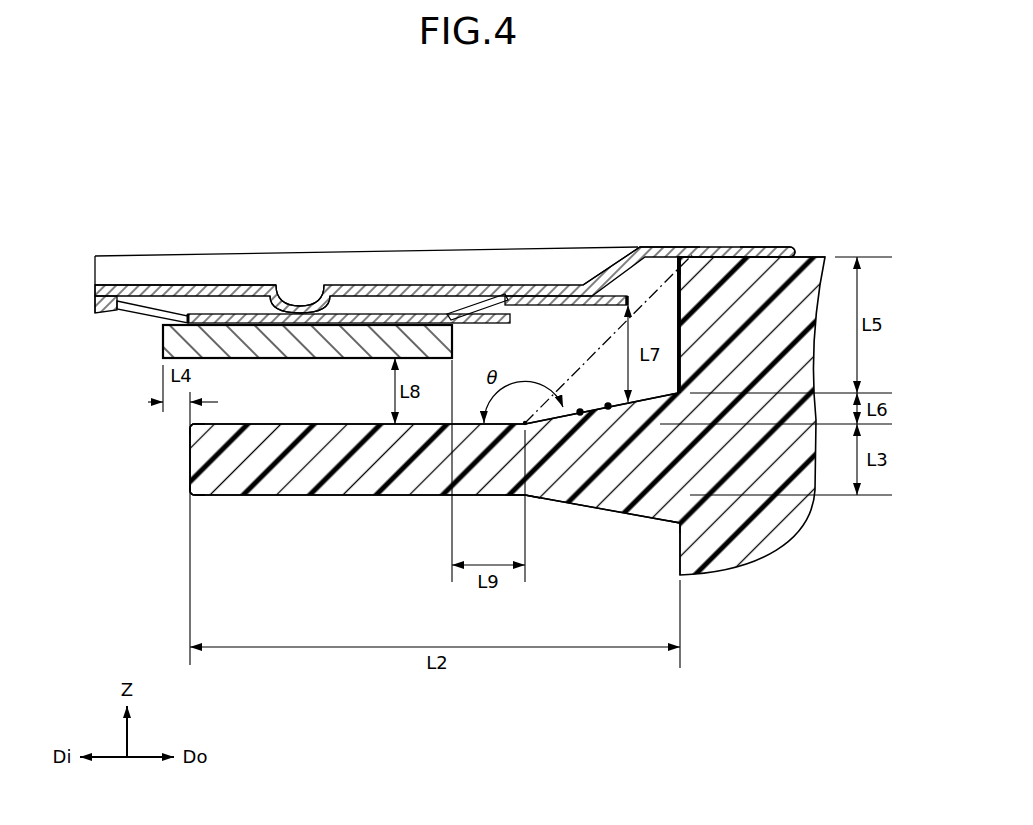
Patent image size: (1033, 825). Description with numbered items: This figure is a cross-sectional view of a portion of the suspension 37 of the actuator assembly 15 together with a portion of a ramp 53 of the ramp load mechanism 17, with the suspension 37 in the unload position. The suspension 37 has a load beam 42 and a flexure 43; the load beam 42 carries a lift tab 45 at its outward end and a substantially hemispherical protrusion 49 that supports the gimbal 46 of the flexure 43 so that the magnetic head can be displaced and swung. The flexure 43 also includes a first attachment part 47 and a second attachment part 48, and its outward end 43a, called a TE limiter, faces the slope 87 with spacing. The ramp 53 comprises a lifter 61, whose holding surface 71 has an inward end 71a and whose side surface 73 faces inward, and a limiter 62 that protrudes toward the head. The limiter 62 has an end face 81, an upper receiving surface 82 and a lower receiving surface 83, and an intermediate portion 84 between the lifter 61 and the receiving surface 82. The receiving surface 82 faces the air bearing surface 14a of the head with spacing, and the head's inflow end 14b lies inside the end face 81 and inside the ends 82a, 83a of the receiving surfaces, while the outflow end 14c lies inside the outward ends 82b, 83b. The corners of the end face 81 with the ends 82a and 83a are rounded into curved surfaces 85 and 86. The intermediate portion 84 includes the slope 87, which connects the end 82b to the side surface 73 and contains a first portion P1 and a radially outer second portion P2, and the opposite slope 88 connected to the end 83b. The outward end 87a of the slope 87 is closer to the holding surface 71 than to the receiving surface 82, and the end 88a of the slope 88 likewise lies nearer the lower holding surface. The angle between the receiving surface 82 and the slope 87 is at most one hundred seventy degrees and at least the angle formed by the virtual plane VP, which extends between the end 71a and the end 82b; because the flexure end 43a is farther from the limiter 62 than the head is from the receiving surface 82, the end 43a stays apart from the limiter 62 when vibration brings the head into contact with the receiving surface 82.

The actuator assembly 15 is at (415, 268).
The suspension 37 is at (415, 268).
The load beam 42 is at (196, 268).
The receiving surface 82 is at (300, 423).
The protrusion 49 is at (318, 302).
The gimbal 46 is at (393, 285).
The outflow end 14c is at (455, 321).
The end of receiving surface 82b is at (506, 300).
The second attachment part 48 is at (580, 412).
The end of flexure 43a is at (629, 294).
The slope 87 is at (677, 350).
The end of slope 87a is at (677, 255).
The end of holding surface 71a is at (690, 247).
The lift tab 45 is at (778, 246).
The holding surface 71 is at (824, 257).
The flexure 43 is at (112, 329).
The first attachment part 47 is at (100, 312).
The inflow end 14b is at (163, 355).
The end of receiving surface 82a is at (193, 424).
The air bearing surface 14a is at (332, 360).
The curved surface 85 is at (190, 425).
The end face 81 is at (190, 462).
The curved surface 86 is at (190, 493).
The end of receiving surface 83a is at (193, 493).
The limiter 62 is at (320, 480).
The receiving surface 83 is at (352, 496).
The end of receiving surface 83b is at (528, 497).
The slope 88 is at (592, 507).
The intermediate portion 84 is at (615, 512).
The end of slope 88a is at (677, 524).
The side surface 73 is at (678, 540).
The lifter 61 is at (795, 521).
The ramp load mechanism 17 is at (513, 443).
The ramp 53 is at (513, 443).
The first portion P1 is at (525, 422).
The second portion P2 is at (608, 406).
The virtual plane VP is at (607, 250).